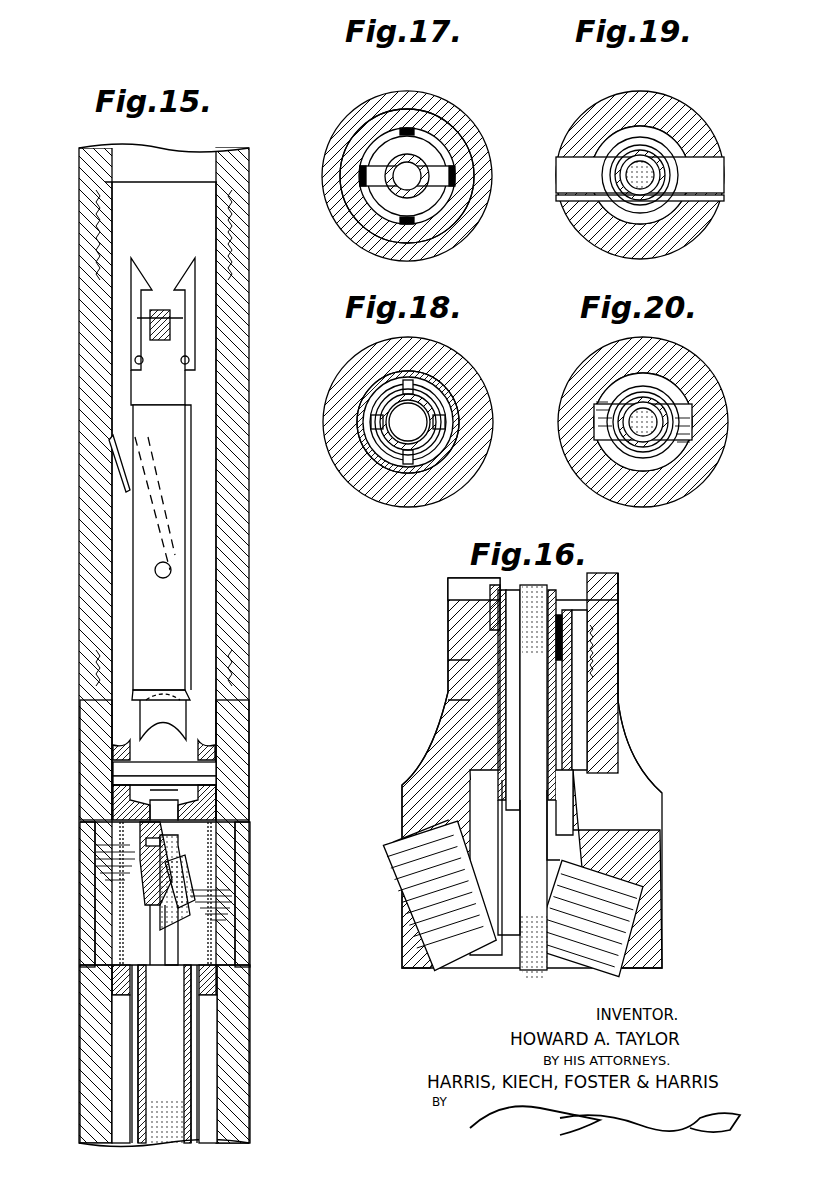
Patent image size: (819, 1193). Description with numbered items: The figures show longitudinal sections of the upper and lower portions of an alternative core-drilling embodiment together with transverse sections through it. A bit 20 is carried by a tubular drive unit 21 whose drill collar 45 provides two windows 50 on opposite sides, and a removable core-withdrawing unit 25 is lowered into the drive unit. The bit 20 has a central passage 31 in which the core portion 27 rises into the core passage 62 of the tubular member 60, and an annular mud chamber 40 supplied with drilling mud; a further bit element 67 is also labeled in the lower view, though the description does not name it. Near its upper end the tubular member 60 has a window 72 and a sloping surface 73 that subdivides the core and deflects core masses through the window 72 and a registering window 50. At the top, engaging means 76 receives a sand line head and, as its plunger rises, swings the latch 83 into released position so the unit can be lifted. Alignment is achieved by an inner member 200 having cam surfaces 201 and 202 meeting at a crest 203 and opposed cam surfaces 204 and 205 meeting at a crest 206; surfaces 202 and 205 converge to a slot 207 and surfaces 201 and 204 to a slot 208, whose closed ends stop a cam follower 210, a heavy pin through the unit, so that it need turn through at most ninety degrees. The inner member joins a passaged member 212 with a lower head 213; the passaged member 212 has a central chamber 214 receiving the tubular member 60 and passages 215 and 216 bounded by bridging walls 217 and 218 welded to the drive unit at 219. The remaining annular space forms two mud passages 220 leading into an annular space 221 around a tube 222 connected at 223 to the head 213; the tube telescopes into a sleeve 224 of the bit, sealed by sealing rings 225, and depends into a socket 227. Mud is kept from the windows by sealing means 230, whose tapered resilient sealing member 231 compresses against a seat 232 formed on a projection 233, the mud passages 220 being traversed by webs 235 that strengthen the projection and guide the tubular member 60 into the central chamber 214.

In FIG. 16, the bit 20 is at (628, 724).
In FIG. 15, the tubular drive unit 21 is at (77, 578).
In FIG. 15, the core-withdrawing unit 25 is at (130, 619).
In FIG. 15, the core portion 27 is at (160, 1105).
In FIG. 19, the core portion 27 is at (680, 145).
In FIG. 16, the core portion 27 is at (545, 945).
In FIG. 16, the central passage 31 is at (520, 935).
In FIG. 16, the annular mud chamber 40 is at (455, 765).
In FIG. 15, the drill collar 45 is at (246, 610).
In FIG. 19, the drill collar 45 is at (578, 128).
In FIG. 18, the drill collar 45 is at (480, 450).
In FIG. 20, the drill collar 45 is at (643, 422).
In FIG. 15, the window 50 is at (100, 878).
In FIG. 19, the window 50 is at (700, 186).
In FIG. 15, the tubular member 60 is at (140, 1075).
In FIG. 19, the tubular member 60 is at (640, 152).
In FIG. 18, the tubular member 60 is at (372, 466).
In FIG. 20, the tubular member 60 is at (622, 408).
In FIG. 16, the tubular member 60 is at (575, 596).
In FIG. 15, the core passage 62 is at (135, 1046).
In FIG. 16, the bit bore 67 is at (636, 768).
In FIG. 15, the window 72 is at (200, 860).
In FIG. 19, the window 72 is at (645, 240).
In FIG. 15, the sloping surface 73 is at (130, 900).
In FIG. 15, the engaging means 76 is at (129, 386).
In FIG. 15, the latch 83 is at (115, 471).
In FIG. 15, the inner member 200 is at (210, 790).
In FIG. 17, the inner member 200 is at (358, 150).
In FIG. 15, the cam surface 201 is at (118, 736).
In FIG. 17, the cam surface 201 is at (382, 130).
In FIG. 15, the cam surface 202 is at (210, 740).
In FIG. 17, the cam surface 202 is at (452, 140).
In FIG. 15, the crest 203 is at (205, 690).
In FIG. 17, the crest 203 is at (414, 130).
In FIG. 17, the cam surface 204 is at (372, 238).
In FIG. 17, the cam surface 205 is at (442, 212).
In FIG. 17, the crest 206 is at (410, 240).
In FIG. 15, the slot 207 is at (212, 757).
In FIG. 17, the slot 207 is at (452, 178).
In FIG. 19, the slot 207 is at (598, 168).
In FIG. 15, the slot 208 is at (115, 757).
In FIG. 17, the slot 208 is at (365, 176).
In FIG. 15, the cam follower 210 is at (116, 770).
In FIG. 17, the cam follower 210 is at (350, 202).
In FIG. 15, the passaged member 212 is at (195, 912).
In FIG. 19, the passaged member 212 is at (612, 150).
In FIG. 15, the head 213 is at (212, 976).
In FIG. 20, the head 213 is at (678, 432).
In FIG. 15, the central chamber 214 is at (215, 950).
In FIG. 19, the central chamber 214 is at (628, 235).
In FIG. 15, the passage 215 is at (130, 910).
In FIG. 19, the passage 215 is at (600, 210).
In FIG. 15, the passage 216 is at (200, 896).
In FIG. 19, the passage 216 is at (668, 200).
In FIG. 19, the bridging wall 217 is at (672, 168).
In FIG. 19, the bridging wall 218 is at (604, 178).
In FIG. 15, the weld 219 is at (112, 950).
In FIG. 19, the weld 219 is at (598, 160).
In FIG. 15, the mud passages 220 is at (215, 780).
In FIG. 19, the mud passages 220 is at (657, 130).
In FIG. 18, the mud passages 220 is at (440, 372).
In FIG. 20, the mud passages 220 is at (660, 388).
In FIG. 15, the annular space 221 is at (210, 1078).
In FIG. 15, the tube 222 is at (195, 1054).
In FIG. 20, the tube 222 is at (672, 422).
In FIG. 16, the tube 222 is at (500, 598).
In FIG. 15, the threaded connection 223 is at (118, 975).
In FIG. 16, the sleeve 224 is at (600, 680).
In FIG. 16, the sealing rings 225 is at (580, 652).
In FIG. 16, the socket 227 is at (635, 850).
In FIG. 15, the sealing means 230 is at (212, 815).
In FIG. 15, the sealing member 231 is at (190, 832).
In FIG. 18, the sealing member 231 is at (372, 416).
In FIG. 15, the seat 232 is at (118, 815).
In FIG. 18, the seat 232 is at (366, 436).
In FIG. 15, the projection 233 is at (125, 830).
In FIG. 18, the projection 233 is at (470, 420).
In FIG. 15, the webs 235 is at (112, 858).
In FIG. 18, the webs 235 is at (380, 386).